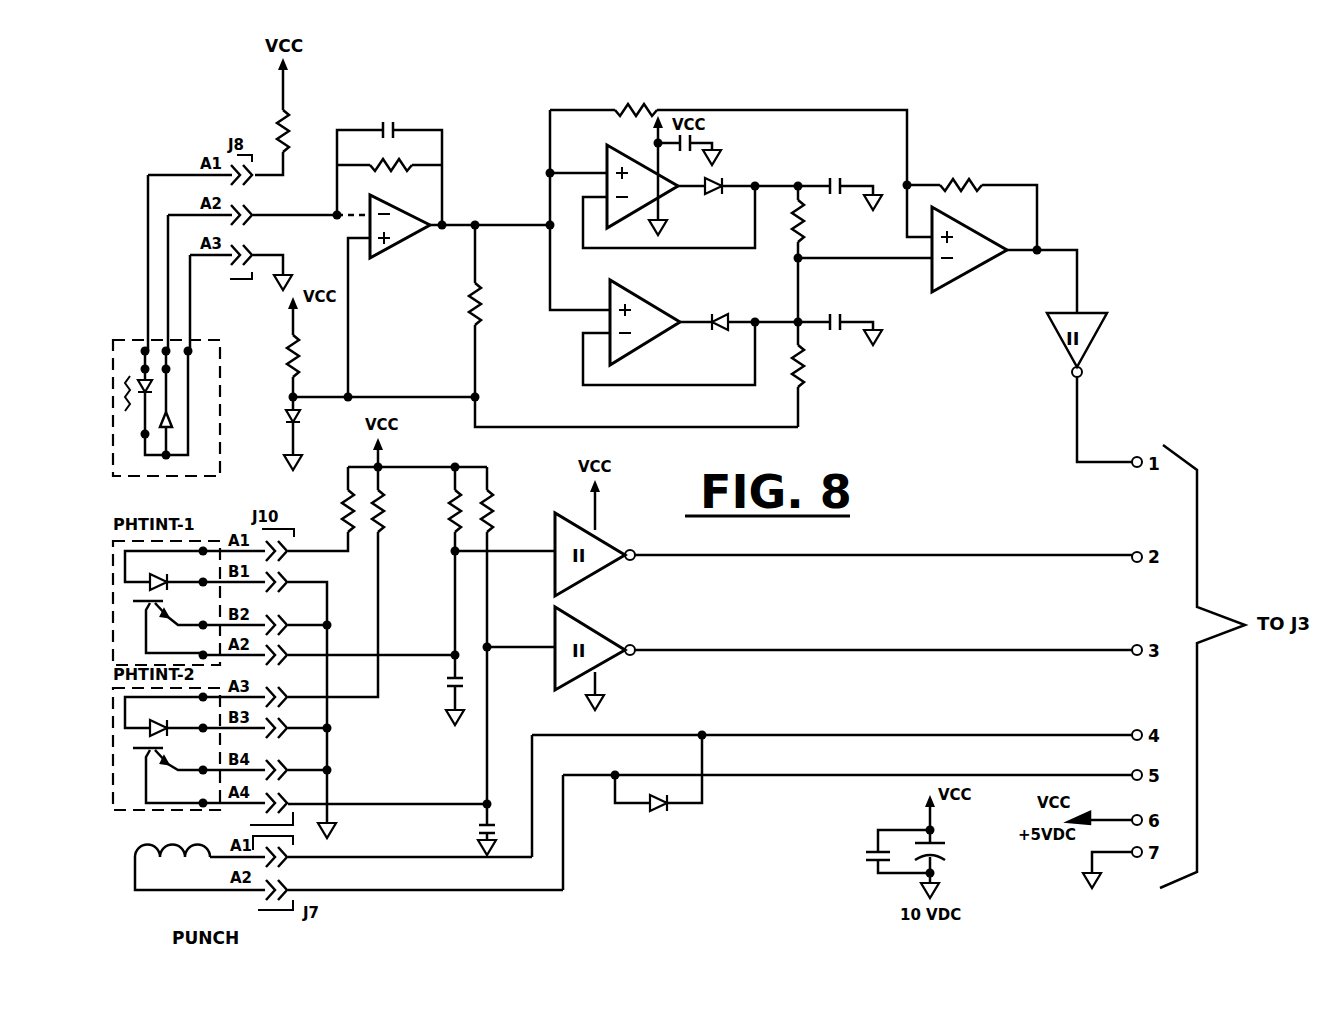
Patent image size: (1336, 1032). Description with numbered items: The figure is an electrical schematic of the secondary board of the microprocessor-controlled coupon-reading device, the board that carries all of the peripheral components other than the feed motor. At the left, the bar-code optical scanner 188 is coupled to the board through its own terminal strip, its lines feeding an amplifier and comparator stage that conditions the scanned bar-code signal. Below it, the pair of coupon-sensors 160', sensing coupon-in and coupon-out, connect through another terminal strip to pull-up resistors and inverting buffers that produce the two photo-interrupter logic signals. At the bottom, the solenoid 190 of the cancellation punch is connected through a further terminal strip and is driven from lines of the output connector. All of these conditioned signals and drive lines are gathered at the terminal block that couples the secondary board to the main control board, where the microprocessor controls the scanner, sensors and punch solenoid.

The bar-code optical scanner 188 is at (130, 417).
The coupon "in" sensor 160' is at (118, 599).
The solenoid 190 is at (157, 843).